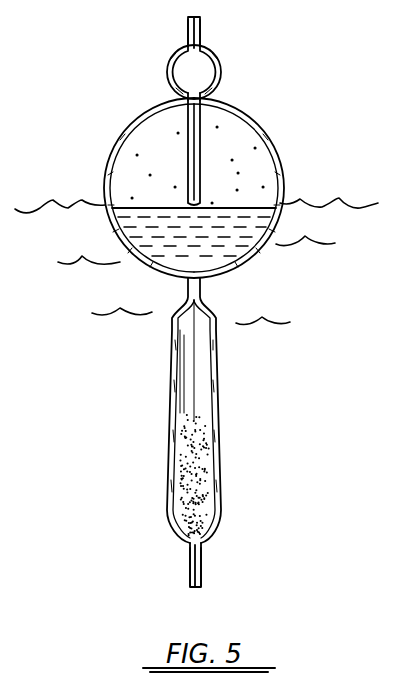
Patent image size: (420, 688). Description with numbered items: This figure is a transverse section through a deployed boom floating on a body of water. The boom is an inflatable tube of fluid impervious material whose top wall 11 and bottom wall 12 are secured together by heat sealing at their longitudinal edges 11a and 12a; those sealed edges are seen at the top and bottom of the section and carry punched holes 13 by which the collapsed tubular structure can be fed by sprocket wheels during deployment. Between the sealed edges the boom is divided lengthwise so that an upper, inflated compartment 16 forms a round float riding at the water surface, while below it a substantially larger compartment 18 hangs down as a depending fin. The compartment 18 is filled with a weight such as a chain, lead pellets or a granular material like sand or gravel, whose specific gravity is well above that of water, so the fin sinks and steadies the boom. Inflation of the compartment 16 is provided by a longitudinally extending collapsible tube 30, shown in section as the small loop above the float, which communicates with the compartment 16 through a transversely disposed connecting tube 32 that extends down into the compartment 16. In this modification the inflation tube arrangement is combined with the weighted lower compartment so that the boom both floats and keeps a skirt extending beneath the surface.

The top wall 11 is at (108, 162).
The bottom wall 12 is at (279, 172).
The longitudinal edge 11a is at (188, 45).
The longitudinal edge 12a is at (200, 27).
The punched holes 13 is at (188, 32).
The compartment 16 is at (229, 184).
The compartment 18 is at (200, 462).
The collapsible tube 30 is at (218, 62).
The connecting tube 32 is at (188, 172).